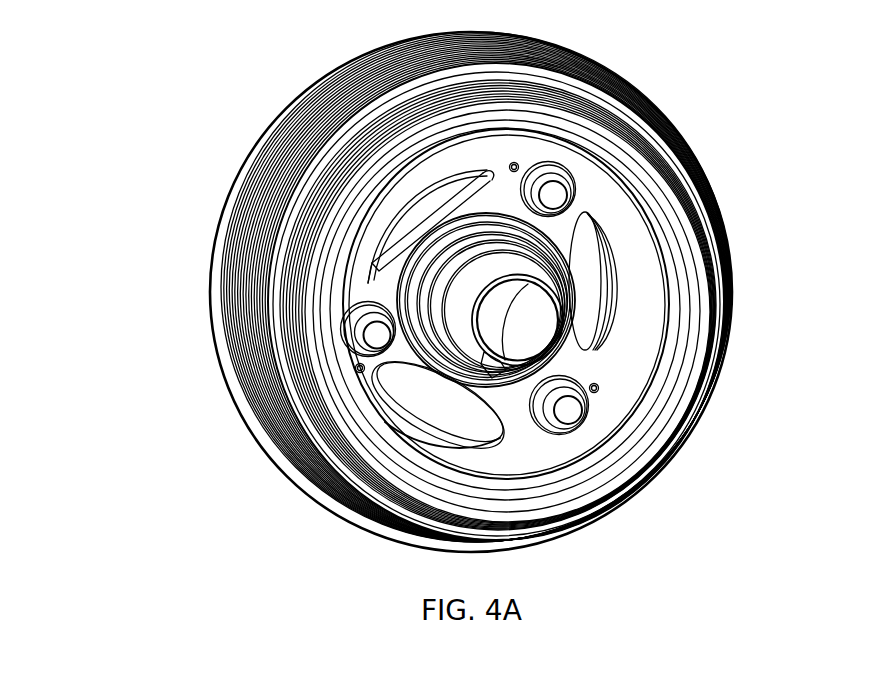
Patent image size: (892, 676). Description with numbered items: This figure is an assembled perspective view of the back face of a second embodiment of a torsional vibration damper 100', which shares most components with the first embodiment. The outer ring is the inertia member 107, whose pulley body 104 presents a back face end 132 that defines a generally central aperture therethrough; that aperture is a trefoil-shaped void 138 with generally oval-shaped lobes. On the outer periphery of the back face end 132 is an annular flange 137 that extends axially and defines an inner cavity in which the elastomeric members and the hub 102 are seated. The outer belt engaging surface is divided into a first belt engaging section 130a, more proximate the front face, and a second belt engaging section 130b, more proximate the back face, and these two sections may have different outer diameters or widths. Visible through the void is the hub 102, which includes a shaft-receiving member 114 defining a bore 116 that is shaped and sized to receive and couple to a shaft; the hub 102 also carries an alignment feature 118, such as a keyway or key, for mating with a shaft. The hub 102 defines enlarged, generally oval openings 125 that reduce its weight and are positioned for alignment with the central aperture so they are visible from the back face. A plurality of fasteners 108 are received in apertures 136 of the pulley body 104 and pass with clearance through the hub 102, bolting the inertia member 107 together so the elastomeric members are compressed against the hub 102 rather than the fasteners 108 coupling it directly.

The torsional vibration damper 100' is at (396, 287).
The hub 102 is at (570, 218).
The pulley body 104 is at (653, 118).
The inertia member 107 is at (654, 480).
The fasteners 108 is at (570, 408).
The shaft-receiving member 114 is at (568, 318).
The bore 116 is at (535, 333).
The alignment feature 118 is at (495, 357).
The enlarged openings 125 is at (470, 186).
The first belt engaging section 130a is at (288, 146).
The second belt engaging section 130b is at (294, 410).
The back face end 132 is at (451, 478).
The apertures 136 is at (580, 418).
The annular flange 137 is at (690, 157).
The window wall 138 is at (622, 253).